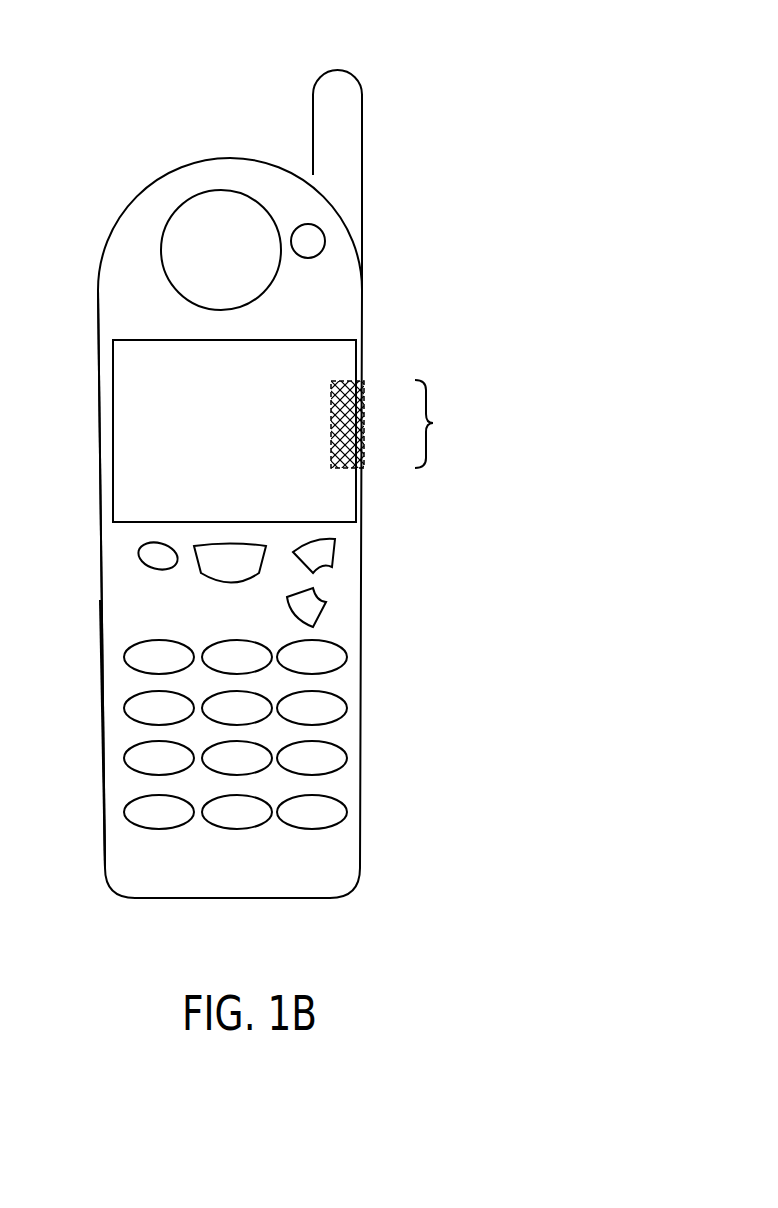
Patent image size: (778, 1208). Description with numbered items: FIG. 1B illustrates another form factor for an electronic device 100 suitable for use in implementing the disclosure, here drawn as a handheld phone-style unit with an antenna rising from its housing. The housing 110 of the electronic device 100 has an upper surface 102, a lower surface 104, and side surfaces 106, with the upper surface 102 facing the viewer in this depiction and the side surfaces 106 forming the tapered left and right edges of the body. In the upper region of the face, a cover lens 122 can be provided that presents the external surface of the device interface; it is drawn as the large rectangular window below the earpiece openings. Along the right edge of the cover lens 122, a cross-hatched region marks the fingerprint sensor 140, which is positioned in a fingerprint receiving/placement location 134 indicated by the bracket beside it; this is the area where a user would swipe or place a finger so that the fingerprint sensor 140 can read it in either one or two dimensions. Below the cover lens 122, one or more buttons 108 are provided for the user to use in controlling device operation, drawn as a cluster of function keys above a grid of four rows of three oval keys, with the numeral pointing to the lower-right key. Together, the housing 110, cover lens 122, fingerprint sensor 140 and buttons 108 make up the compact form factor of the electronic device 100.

The electronic device 100 is at (502, 74).
The upper surface 102 is at (112, 643).
The lower surface 104 is at (98, 365).
The side surfaces 106 is at (102, 754).
The buttons 108 is at (332, 810).
The housing 110 is at (363, 285).
The cover lens 122 is at (130, 473).
The fingerprint receiving/placement location 134 is at (439, 424).
The fingerprint sensor 140 is at (368, 387).